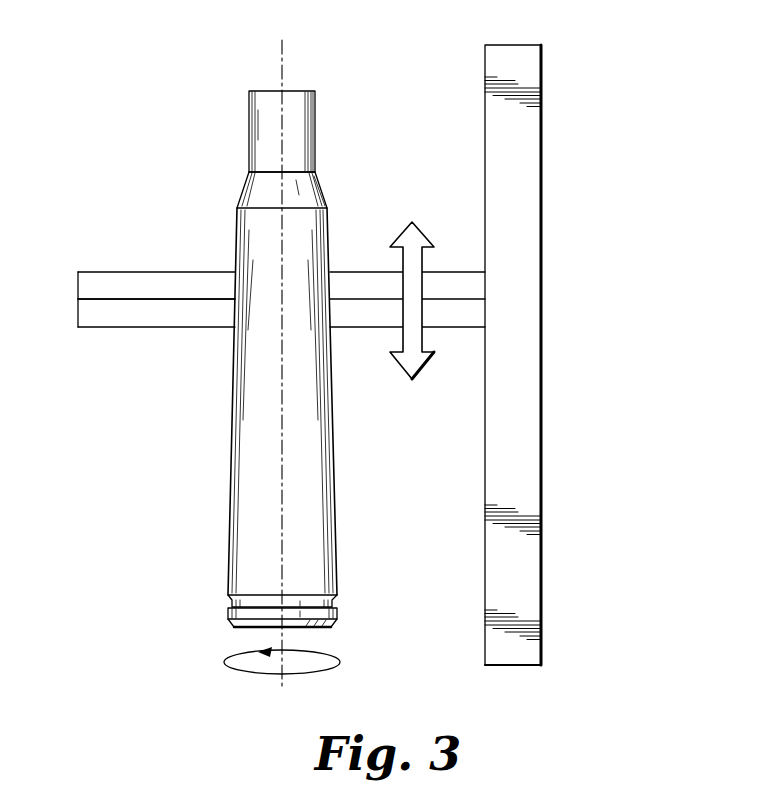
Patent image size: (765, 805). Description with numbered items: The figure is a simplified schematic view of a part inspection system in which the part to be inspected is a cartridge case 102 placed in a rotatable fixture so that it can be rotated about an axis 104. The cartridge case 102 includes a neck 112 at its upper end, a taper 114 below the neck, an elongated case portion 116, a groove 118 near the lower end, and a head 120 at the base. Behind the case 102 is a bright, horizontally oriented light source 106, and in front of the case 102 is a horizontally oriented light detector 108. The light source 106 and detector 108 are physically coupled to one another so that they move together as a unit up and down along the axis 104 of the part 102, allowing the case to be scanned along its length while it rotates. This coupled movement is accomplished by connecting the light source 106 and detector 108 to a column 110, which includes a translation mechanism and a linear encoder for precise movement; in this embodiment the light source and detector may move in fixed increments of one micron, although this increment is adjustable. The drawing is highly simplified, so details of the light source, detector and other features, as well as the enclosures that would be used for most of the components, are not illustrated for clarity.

The cartridge case 102 is at (322, 148).
The axis 104 is at (280, 72).
The light source 106 is at (165, 272).
The light detector 108 is at (120, 300).
The column 110 is at (542, 178).
The neck 112 is at (248, 130).
The taper 114 is at (320, 190).
The case portion 116 is at (335, 490).
The groove 118 is at (333, 604).
The head 120 is at (337, 620).